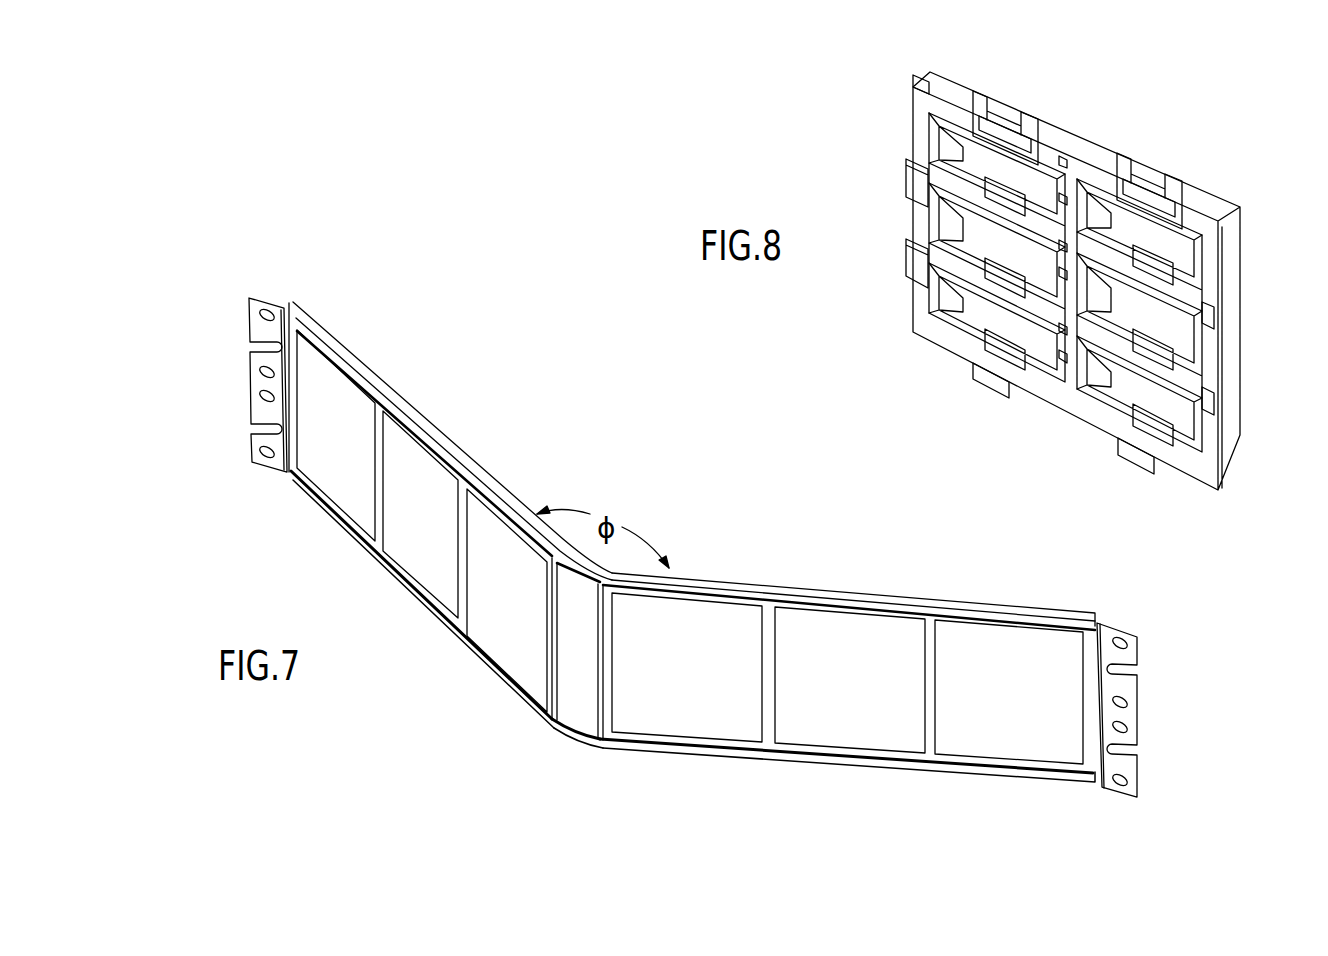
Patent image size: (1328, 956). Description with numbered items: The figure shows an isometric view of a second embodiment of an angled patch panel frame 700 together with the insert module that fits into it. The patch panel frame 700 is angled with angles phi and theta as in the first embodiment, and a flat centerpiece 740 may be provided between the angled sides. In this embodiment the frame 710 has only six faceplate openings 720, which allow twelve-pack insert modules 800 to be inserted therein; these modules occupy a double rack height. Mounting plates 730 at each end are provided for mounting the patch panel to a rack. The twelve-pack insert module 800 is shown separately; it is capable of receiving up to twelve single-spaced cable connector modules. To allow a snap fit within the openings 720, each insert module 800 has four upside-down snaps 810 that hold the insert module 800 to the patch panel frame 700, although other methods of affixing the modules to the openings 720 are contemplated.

In FIG. 7, the patch panel frame 700 is at (470, 724).
In FIG. 7, the frame 710 is at (680, 747).
In FIG. 7, the faceplate openings 720 is at (845, 712).
In FIG. 7, the mounting plates 730 is at (1137, 725).
In FIG. 7, the flat centerpiece 740 is at (577, 702).
In FIG. 8, the twelve-pack insert module 800 is at (1023, 397).
In FIG. 8, the snaps 810 is at (1030, 93).